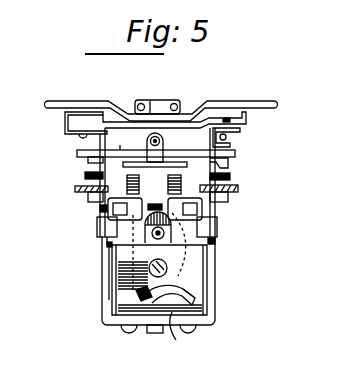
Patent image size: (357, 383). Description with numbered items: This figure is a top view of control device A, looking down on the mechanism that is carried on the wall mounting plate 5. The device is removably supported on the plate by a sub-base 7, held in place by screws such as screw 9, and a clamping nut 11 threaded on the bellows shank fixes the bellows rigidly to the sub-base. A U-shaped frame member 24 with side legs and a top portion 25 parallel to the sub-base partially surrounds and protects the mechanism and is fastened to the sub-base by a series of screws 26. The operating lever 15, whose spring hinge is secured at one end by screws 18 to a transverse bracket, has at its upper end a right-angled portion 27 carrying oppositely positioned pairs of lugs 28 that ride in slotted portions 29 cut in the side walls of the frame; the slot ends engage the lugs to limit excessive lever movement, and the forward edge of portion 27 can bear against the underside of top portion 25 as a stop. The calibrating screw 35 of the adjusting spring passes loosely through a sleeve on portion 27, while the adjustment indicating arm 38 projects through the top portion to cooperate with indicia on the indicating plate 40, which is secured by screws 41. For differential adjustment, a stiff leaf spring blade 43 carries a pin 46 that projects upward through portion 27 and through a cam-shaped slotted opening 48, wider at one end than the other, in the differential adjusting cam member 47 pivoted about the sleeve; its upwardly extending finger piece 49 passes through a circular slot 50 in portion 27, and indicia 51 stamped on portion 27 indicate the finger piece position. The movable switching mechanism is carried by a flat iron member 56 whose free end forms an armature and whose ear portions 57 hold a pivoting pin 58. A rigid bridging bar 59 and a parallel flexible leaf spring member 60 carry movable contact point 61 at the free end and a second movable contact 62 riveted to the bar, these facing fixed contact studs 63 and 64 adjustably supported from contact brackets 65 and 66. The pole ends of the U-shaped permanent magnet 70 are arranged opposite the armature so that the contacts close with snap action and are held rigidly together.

The mounting plate 5 is at (256, 102).
The sub-base 7 is at (248, 124).
The screw 9 is at (177, 108).
The clamping nut 11 is at (151, 103).
The operating lever 15 is at (106, 248).
The screws 18 is at (146, 223).
The U-shaped frame member 24 is at (228, 145).
The top portion 25 is at (102, 316).
The screws 26 is at (226, 117).
The portion 27 is at (192, 268).
The lugs 28 is at (82, 137).
The slotted portions 29 is at (99, 210).
The calibrating screw 35 is at (195, 283).
The adjustment indicating arm 38 is at (152, 334).
The indicating plate 40 is at (132, 334).
The screws 41 is at (196, 333).
The leaf spring blade 43 is at (160, 204).
The pin 46 is at (165, 262).
The differential adjusting cam member 47 is at (146, 250).
The cam-shaped slotted opening 48 is at (158, 227).
The finger piece 49 is at (136, 294).
The circular slot 50 is at (200, 303).
The indicia 51 is at (176, 340).
The flat iron member 56 is at (168, 168).
The ear portions 57 is at (168, 147).
The pivoting pin 58 is at (151, 139).
The rigid bridging bar 59 is at (120, 148).
The flexible leaf spring member 60 is at (125, 164).
The movable contact point 61 is at (88, 160).
The movable contact 62 is at (230, 163).
The fixed contact stud 63 is at (85, 176).
The fixed contact stud 64 is at (231, 177).
The contact bracket 65 is at (75, 190).
The contact bracket 66 is at (239, 189).
The U-shaped permanent magnet 70 is at (181, 180).